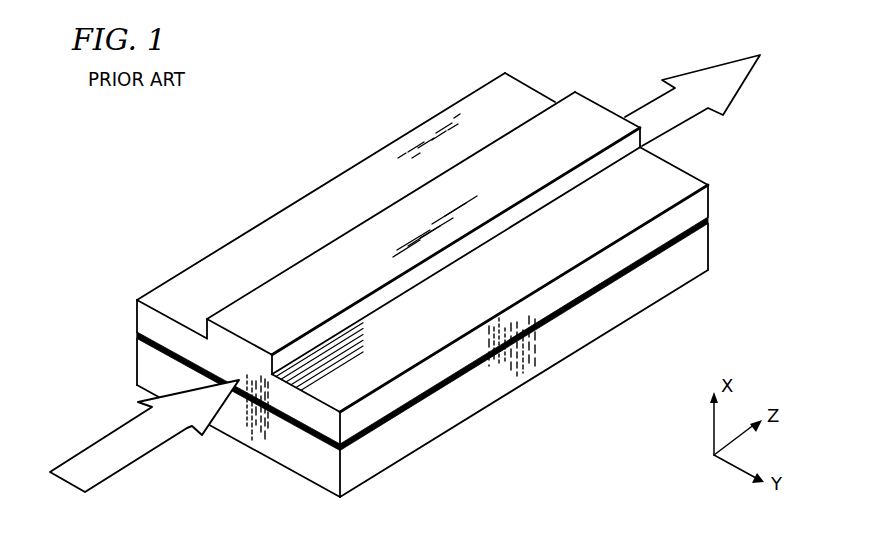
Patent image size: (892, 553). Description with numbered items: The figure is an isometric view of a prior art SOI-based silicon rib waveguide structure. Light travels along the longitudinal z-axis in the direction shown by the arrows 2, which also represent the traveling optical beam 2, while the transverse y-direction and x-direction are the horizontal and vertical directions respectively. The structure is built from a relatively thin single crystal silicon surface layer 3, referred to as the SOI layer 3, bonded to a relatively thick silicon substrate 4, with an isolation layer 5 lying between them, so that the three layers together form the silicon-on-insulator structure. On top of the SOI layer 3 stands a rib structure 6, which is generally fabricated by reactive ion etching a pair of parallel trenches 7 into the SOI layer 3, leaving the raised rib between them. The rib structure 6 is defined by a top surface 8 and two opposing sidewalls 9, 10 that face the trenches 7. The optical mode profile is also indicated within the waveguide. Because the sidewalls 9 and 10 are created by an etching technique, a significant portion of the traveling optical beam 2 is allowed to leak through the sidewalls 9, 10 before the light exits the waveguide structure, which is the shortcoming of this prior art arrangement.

The arrows 2 is at (100, 465).
The single crystal silicon surface layer 3 is at (145, 320).
The silicon substrate 4 is at (318, 467).
The isolation layer 5 is at (163, 356).
The rib structure 6 is at (613, 100).
The parallel trenches 7 is at (520, 93).
The top surface 8 is at (388, 232).
The sidewall 9 is at (205, 338).
The sidewall 10 is at (490, 229).